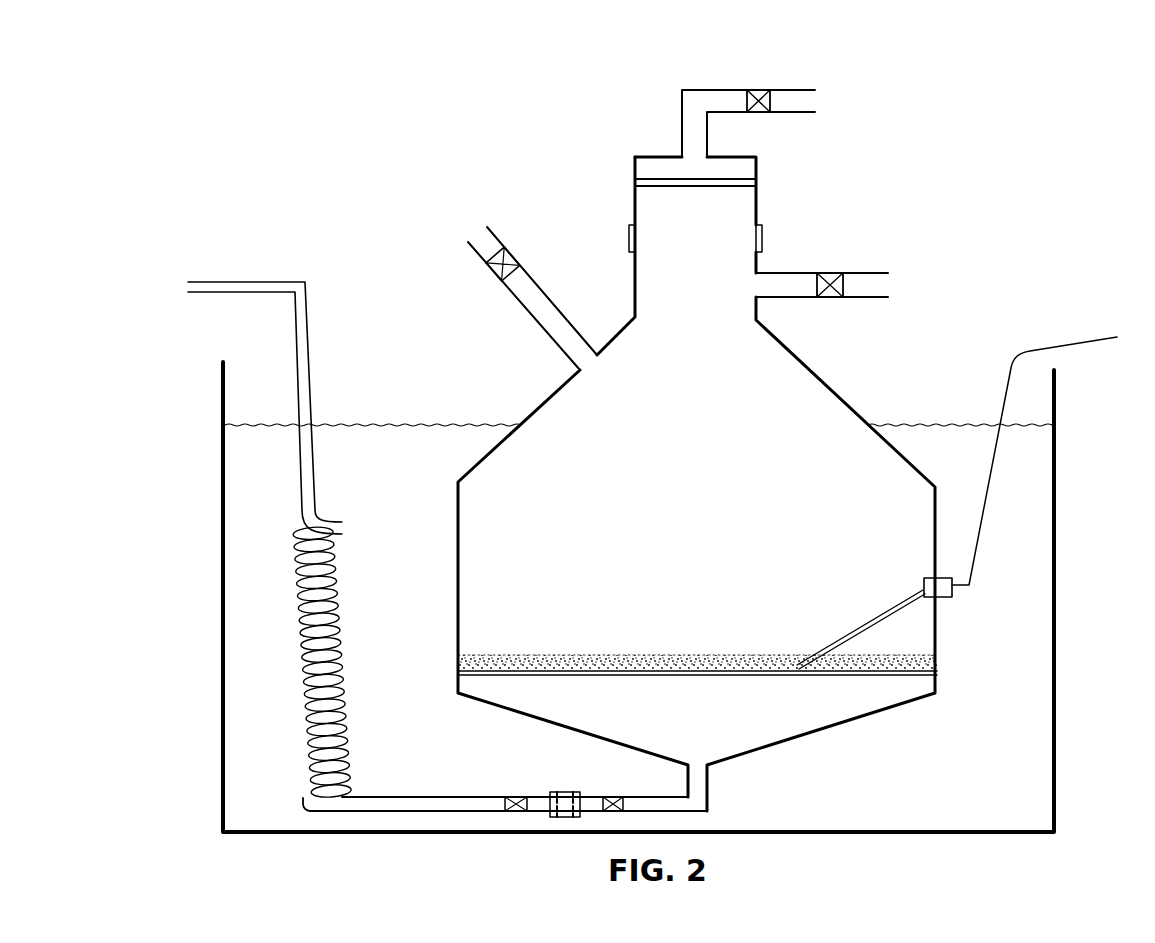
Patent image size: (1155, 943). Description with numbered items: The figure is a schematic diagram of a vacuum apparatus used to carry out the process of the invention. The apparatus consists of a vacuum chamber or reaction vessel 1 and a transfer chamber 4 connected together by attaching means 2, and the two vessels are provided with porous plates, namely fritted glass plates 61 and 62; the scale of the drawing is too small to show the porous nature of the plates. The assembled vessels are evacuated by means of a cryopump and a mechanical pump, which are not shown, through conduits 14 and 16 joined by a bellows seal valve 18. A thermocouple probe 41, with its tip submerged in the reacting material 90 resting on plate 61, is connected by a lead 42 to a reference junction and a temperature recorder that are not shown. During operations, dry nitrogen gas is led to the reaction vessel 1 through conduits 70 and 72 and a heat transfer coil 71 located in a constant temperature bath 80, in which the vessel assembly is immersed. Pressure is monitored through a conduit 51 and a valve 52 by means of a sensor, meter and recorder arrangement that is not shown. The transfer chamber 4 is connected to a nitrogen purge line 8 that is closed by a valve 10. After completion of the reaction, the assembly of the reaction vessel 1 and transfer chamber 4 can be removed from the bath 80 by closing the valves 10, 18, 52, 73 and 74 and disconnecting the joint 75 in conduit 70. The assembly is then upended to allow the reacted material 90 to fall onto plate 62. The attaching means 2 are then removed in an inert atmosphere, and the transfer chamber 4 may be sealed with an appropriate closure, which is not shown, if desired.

The vacuum chamber or reaction vessel 1 is at (832, 395).
The attaching means 2 is at (629, 235).
The transfer chamber 4 is at (762, 208).
The nitrogen purge line 8 is at (682, 100).
The valve 10 is at (761, 90).
The conduit 14 is at (786, 271).
The conduit 16 is at (853, 303).
The bellows seal valve 18 is at (830, 277).
The thermocouple probe 41 is at (860, 624).
The lead 42 is at (1068, 345).
The conduit 51 is at (542, 333).
The valve 52 is at (508, 250).
The fritted glass plate 61 is at (700, 675).
The fritted glass plate 62 is at (690, 188).
The conduit 70 is at (417, 795).
The heat transfer coil 71 is at (345, 686).
The conduit 72 is at (248, 283).
The valve 73 is at (515, 796).
The valve 74 is at (617, 798).
The joint 75 is at (565, 790).
The constant temperature bath 80 is at (376, 478).
The reacting material 90 is at (544, 655).